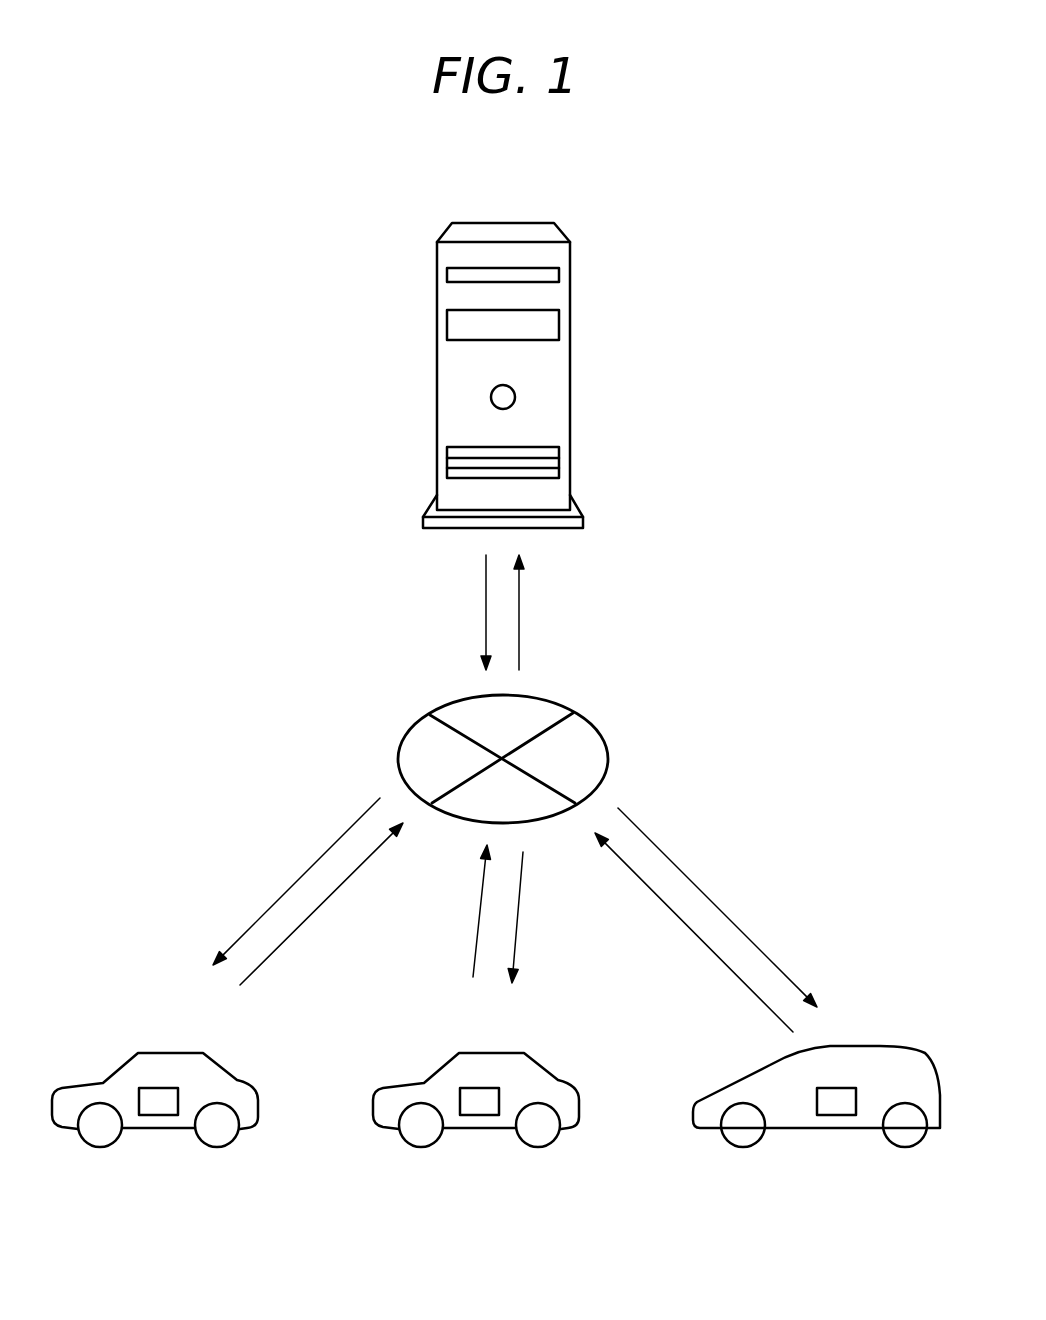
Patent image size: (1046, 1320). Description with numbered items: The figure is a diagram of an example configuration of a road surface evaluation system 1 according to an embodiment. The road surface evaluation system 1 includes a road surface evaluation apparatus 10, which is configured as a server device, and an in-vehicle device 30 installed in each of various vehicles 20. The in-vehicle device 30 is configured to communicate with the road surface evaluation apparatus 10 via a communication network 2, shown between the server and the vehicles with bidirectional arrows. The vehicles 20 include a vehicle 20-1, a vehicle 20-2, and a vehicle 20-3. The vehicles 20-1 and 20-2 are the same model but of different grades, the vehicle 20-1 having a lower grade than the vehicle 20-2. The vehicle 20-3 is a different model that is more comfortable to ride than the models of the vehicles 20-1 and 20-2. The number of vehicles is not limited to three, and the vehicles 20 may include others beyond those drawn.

The road surface evaluation system 1 is at (758, 274).
The road surface evaluation apparatus 10 is at (528, 222).
The communication network 2 is at (588, 722).
The vehicles 20 is at (500, 1056).
The vehicle 20-1 is at (155, 1052).
The vehicle 20-2 is at (512, 1023).
The vehicle 20-3 is at (892, 1043).
The in-vehicle device 30 is at (162, 1117).